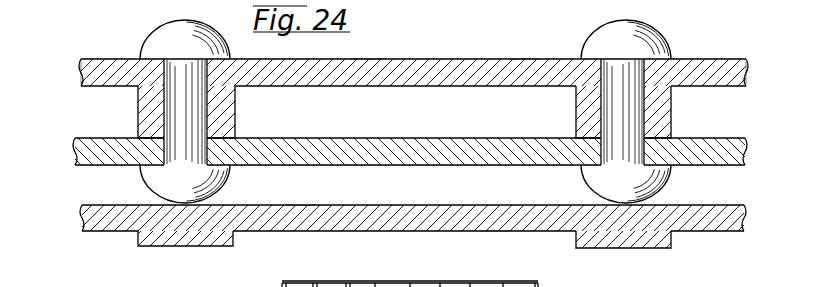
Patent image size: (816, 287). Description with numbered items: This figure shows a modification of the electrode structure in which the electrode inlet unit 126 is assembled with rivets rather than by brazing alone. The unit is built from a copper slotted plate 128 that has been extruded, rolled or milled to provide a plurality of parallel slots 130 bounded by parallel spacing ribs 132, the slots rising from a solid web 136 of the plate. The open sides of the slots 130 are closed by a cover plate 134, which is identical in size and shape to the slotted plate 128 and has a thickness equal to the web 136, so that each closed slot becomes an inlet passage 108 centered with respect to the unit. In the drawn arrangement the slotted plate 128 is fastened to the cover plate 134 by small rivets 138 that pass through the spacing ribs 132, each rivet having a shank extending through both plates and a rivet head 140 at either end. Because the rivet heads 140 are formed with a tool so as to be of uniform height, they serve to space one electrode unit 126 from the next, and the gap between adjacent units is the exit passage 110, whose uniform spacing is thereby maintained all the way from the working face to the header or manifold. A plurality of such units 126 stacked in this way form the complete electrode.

The inlet passage 108 is at (409, 123).
The exit passage 110 is at (454, 197).
The electrode inlet unit 126 is at (366, 59).
The slotted plate 128 is at (524, 72).
The slot 130 is at (108, 97).
The spacing rib 132 is at (153, 115).
The cover plate 134 is at (367, 156).
The web 136 is at (82, 72).
The rivet 138 is at (190, 102).
The rivet head 140 is at (205, 34).